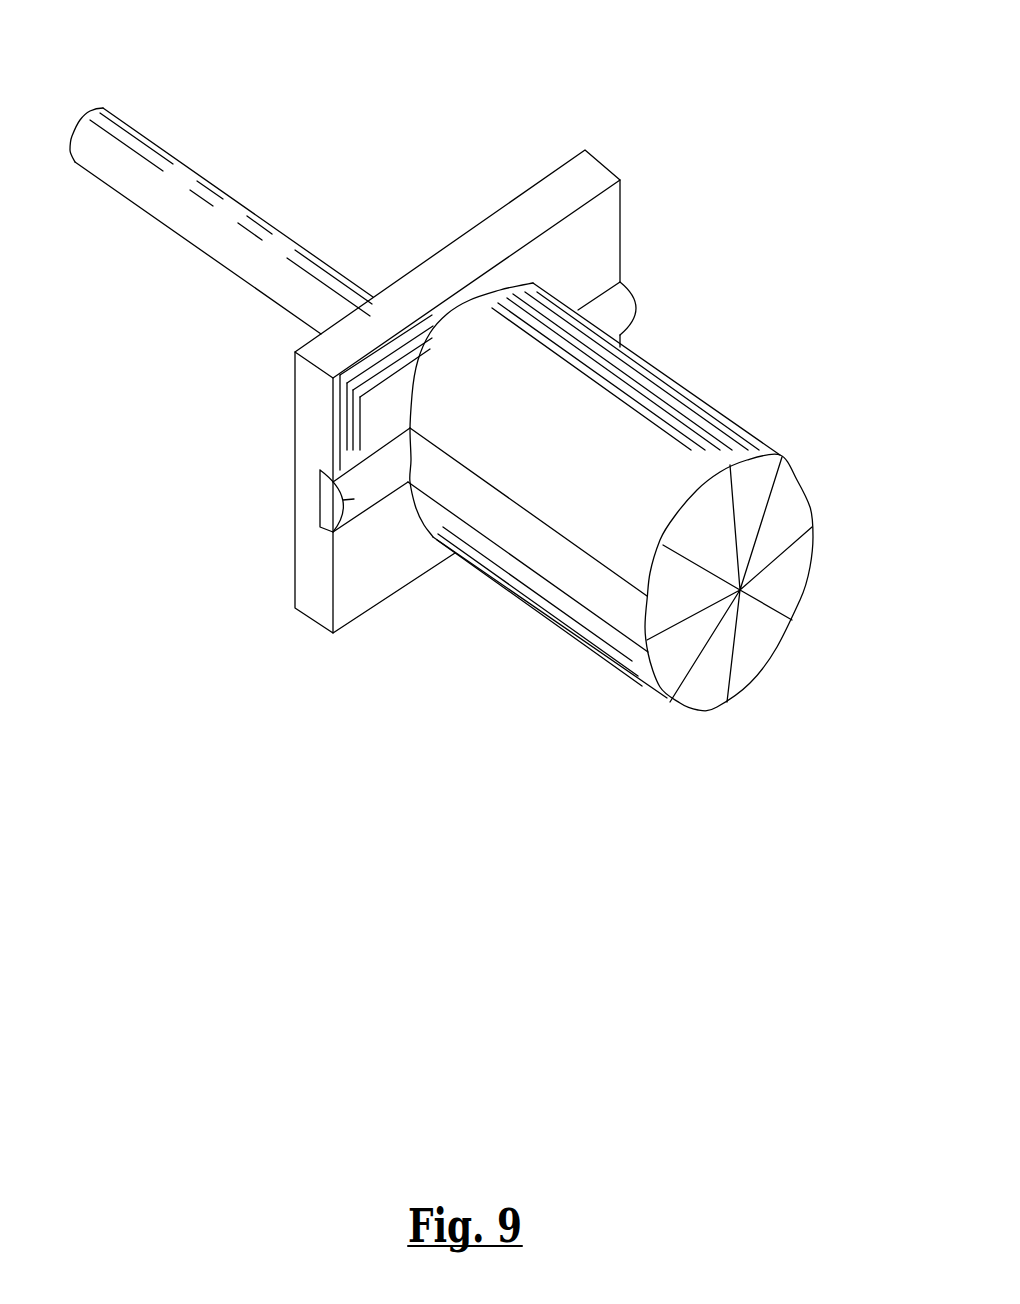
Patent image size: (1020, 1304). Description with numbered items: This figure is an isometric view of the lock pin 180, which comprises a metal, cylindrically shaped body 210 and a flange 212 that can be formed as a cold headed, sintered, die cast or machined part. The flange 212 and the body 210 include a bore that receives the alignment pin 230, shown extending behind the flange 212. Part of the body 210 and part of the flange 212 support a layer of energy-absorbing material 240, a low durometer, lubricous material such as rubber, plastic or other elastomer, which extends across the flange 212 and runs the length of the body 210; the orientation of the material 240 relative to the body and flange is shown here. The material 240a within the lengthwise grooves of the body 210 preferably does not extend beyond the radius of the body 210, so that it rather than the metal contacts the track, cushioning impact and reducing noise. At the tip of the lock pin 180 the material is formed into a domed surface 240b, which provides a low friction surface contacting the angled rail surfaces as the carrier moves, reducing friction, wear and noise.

The lock pin 180 is at (733, 357).
The alignment pin 230 is at (153, 192).
The flange 212 is at (567, 240).
The energy-absorbing material 240 is at (627, 316).
The cylindrically shaped body 210 is at (643, 478).
The energy absorbing material within the grooves 240a is at (541, 543).
The domed surface 240b is at (753, 640).